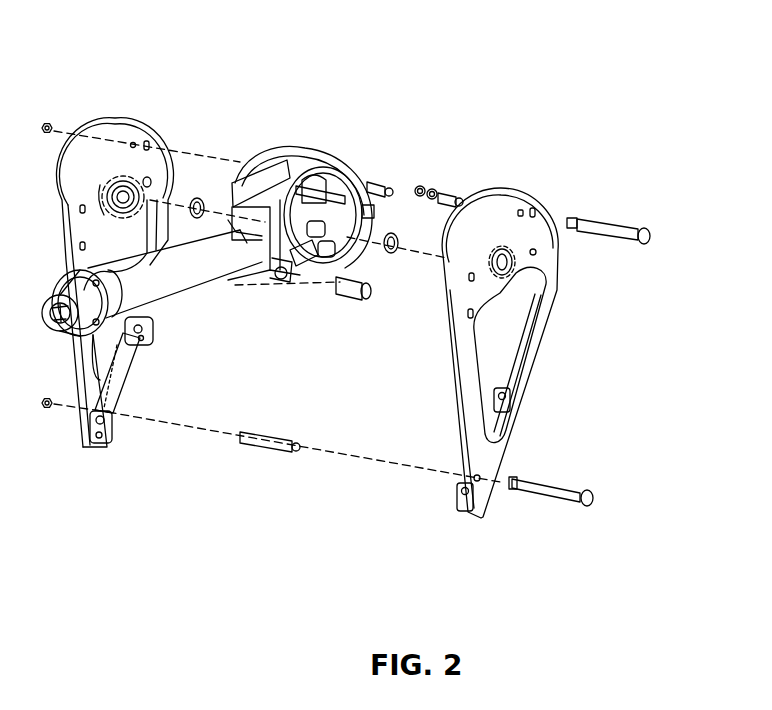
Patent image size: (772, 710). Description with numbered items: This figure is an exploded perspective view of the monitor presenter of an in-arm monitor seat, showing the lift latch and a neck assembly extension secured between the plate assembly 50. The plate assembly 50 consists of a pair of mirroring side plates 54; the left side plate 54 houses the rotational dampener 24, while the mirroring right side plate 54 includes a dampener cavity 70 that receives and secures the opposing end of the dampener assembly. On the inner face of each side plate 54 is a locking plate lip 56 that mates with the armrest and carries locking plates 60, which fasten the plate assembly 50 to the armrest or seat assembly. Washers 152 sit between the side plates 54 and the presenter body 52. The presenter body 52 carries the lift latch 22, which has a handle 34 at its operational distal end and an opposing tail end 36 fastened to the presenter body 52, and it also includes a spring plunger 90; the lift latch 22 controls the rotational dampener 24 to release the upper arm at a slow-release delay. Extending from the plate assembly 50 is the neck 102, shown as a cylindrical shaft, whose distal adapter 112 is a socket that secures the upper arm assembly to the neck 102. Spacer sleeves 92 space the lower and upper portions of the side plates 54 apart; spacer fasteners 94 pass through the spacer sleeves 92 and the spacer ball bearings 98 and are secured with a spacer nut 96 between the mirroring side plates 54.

The plate assembly 50 is at (642, 122).
The side plate 54 is at (112, 118).
The rotational dampener 24 is at (147, 198).
The dampener cavity 70 is at (513, 263).
The spacer nut 96 is at (40, 121).
The washer 152 is at (195, 197).
The lift latch 22 is at (302, 150).
The handle 34 is at (240, 162).
The tail end 36 is at (339, 170).
The presenter body 52 is at (283, 280).
The neck 102 is at (200, 280).
The adapter 112 is at (62, 292).
The locking plate lip 56 is at (118, 378).
The locking plate 60 is at (152, 327).
The spacer sleeve 92 is at (380, 182).
The spacer ball bearing 98 is at (424, 188).
The spring plunger 90 is at (368, 300).
The spacer fastener 94 is at (652, 236).